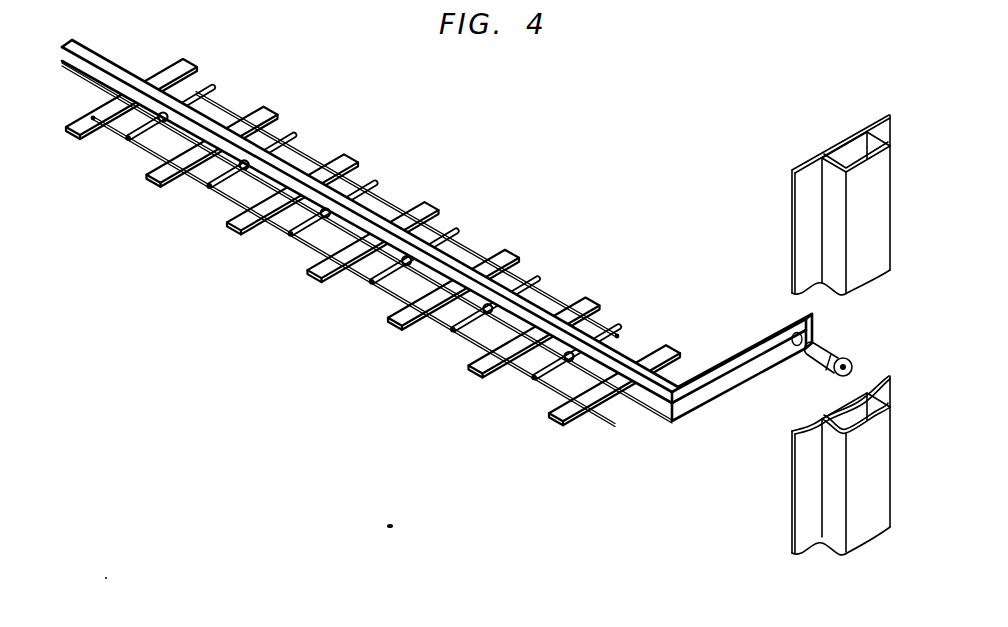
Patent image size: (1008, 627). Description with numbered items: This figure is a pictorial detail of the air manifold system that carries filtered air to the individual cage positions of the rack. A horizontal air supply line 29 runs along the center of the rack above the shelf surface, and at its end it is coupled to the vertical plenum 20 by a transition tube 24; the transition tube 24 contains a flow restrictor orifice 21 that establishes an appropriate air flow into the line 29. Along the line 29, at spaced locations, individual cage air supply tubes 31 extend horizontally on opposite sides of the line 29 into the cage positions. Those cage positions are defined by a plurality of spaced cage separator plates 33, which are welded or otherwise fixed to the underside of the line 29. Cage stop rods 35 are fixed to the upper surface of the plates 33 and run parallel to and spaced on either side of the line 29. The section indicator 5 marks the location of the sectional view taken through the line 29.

The plenum 20 is at (831, 149).
The flow restrictor orifice 21 is at (846, 358).
The transition tube 24 is at (813, 361).
The air supply line 29 is at (695, 406).
The cage air supply tube 31 is at (437, 258).
The cage separator plate 33 is at (190, 63).
The cage stop rod 35 is at (616, 334).
The section line 5- 5 is at (460, 231).